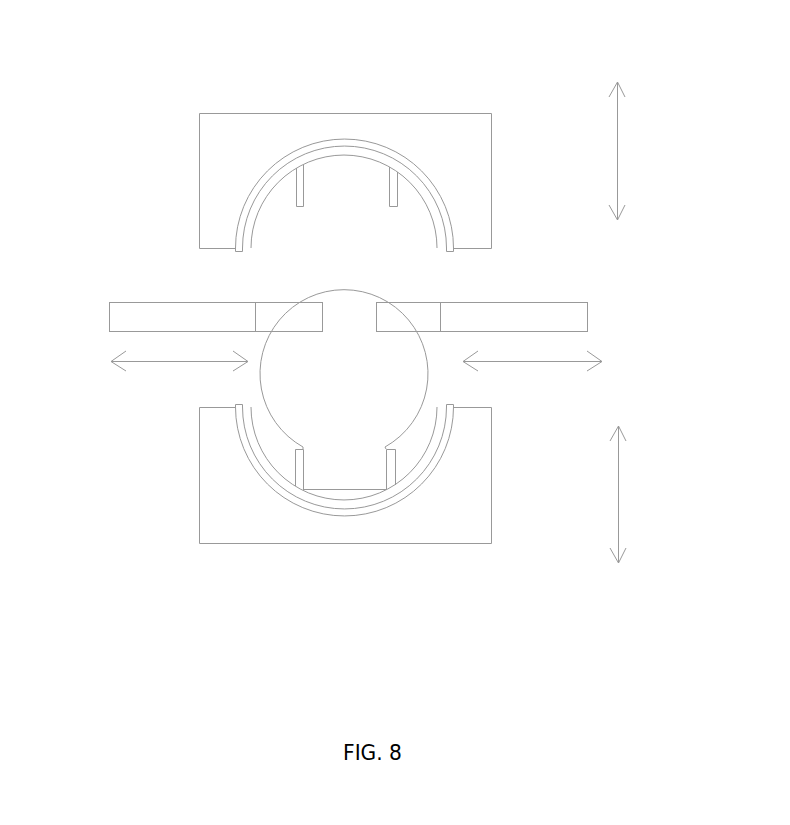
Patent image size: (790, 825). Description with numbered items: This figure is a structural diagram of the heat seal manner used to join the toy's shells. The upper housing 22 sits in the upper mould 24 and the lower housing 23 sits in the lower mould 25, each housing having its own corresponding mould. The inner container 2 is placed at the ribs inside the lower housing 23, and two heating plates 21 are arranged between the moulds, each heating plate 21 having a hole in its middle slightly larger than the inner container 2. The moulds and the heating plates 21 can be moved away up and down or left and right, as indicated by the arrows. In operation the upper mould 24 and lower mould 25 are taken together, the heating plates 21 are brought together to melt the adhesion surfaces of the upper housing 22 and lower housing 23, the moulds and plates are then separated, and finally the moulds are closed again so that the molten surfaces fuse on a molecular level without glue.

The inner container 2 is at (393, 411).
The heating plate 21 is at (188, 317).
The upper housing 22 is at (273, 175).
The lower housing 23 is at (268, 467).
The upper mould 24 is at (448, 128).
The lower mould 25 is at (457, 509).